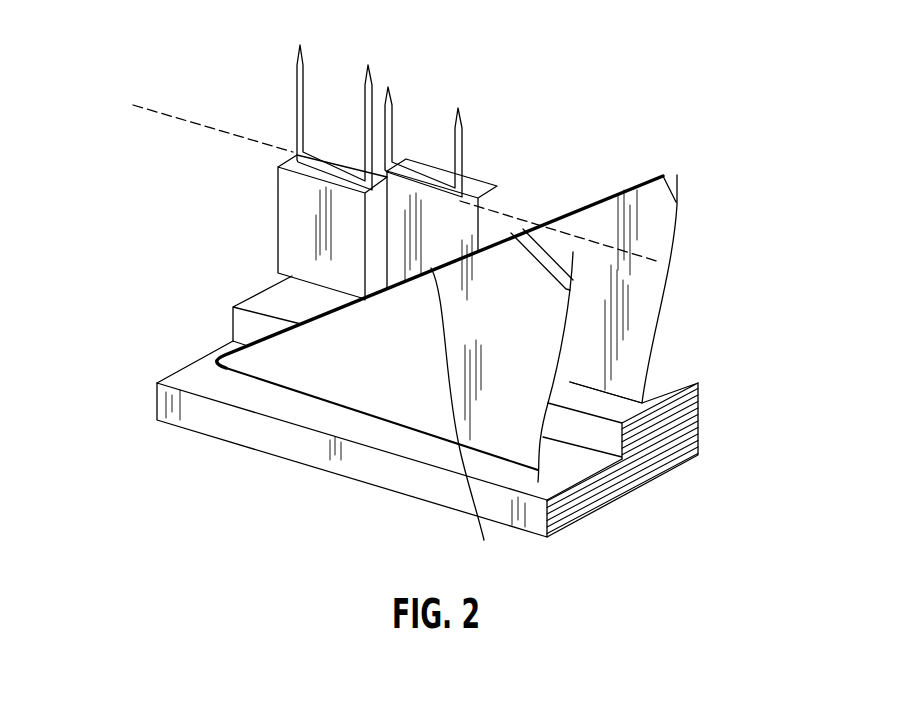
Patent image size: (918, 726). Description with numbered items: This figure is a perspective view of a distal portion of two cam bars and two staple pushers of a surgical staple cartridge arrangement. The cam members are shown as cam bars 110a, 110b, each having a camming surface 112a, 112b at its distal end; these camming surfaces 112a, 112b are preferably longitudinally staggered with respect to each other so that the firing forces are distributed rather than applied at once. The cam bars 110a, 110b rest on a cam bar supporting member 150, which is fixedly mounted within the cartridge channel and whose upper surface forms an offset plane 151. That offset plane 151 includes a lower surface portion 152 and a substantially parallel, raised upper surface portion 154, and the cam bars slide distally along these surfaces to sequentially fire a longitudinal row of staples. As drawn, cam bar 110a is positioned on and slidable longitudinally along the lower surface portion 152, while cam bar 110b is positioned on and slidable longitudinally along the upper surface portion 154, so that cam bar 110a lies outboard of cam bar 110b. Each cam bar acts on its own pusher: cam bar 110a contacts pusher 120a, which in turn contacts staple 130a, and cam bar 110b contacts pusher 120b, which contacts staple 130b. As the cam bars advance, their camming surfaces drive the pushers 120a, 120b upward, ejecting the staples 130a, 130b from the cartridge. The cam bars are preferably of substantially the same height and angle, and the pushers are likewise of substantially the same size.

The cam bar 110a is at (330, 382).
The cam bar 110b is at (662, 230).
The camming surface 112a is at (475, 423).
The camming surface 112b is at (555, 223).
The staple pusher 120a is at (288, 227).
The staple pusher 120b is at (479, 198).
The staple 130a is at (295, 92).
The staple 130b is at (462, 150).
The cam bar supporting member 150 is at (420, 482).
The offset plane 151 is at (216, 320).
The lower surface portion 152 is at (548, 478).
The upper surface portion 154 is at (620, 412).